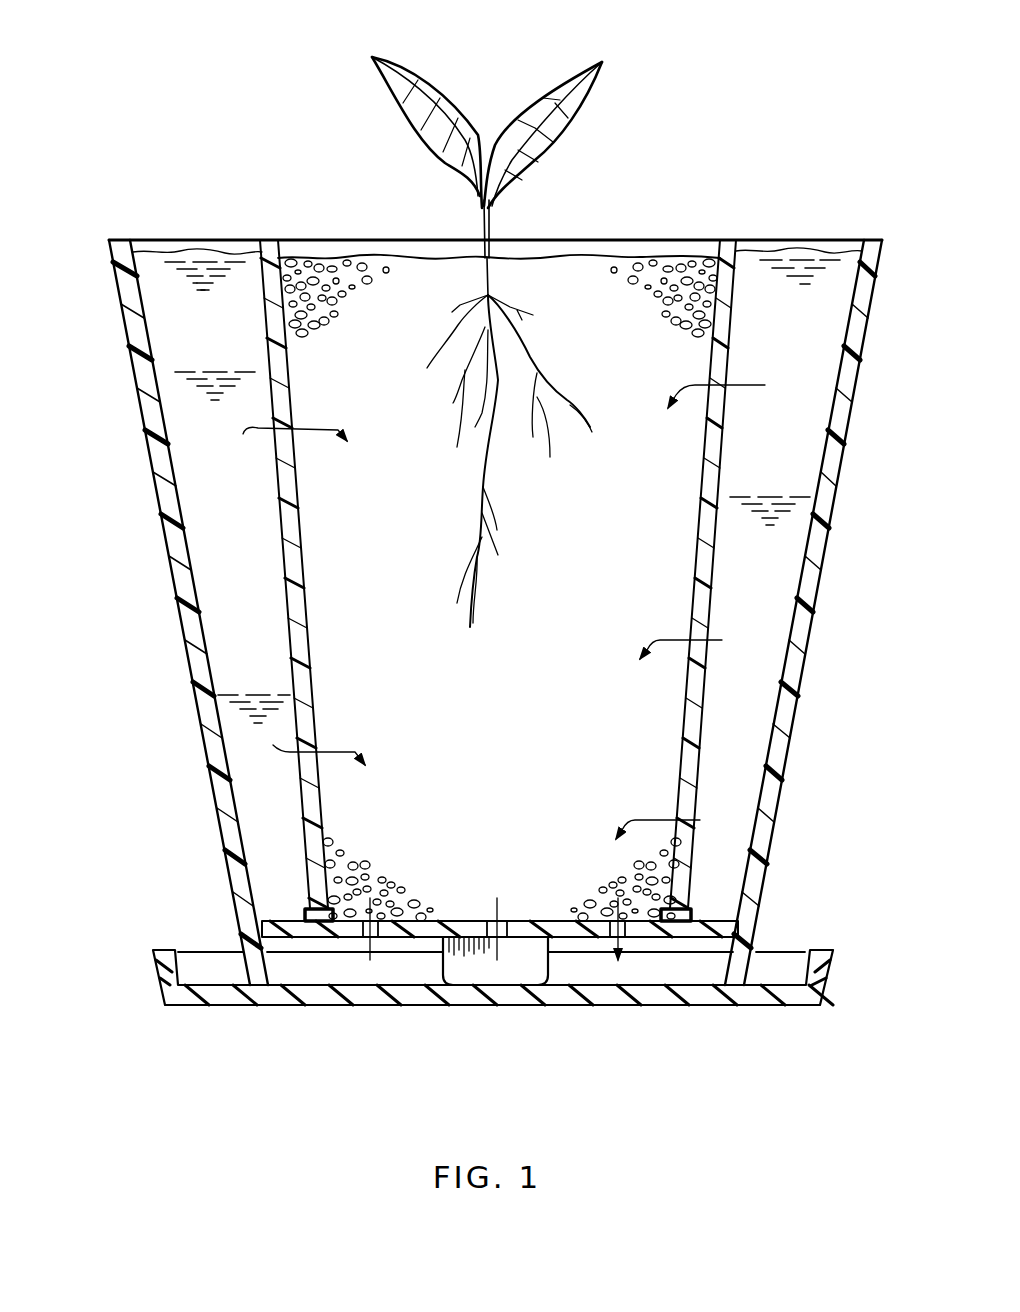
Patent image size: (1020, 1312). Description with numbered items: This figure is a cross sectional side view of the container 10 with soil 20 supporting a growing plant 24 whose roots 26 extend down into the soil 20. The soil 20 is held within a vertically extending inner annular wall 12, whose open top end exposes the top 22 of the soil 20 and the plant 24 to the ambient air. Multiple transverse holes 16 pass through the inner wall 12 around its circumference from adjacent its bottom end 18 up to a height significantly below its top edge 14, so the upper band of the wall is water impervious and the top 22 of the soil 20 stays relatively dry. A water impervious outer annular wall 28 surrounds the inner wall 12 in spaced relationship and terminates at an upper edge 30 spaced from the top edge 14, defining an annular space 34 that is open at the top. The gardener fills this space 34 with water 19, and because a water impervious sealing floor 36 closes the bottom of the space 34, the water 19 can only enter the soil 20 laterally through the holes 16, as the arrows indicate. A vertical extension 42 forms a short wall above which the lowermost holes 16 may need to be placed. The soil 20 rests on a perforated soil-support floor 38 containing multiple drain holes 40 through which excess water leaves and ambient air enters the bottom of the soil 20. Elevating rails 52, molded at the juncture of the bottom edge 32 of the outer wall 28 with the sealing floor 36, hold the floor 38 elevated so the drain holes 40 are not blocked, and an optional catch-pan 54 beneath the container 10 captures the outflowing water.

The container 10 is at (311, 220).
The inner annular wall 12 is at (299, 493).
The top edge of inner wall 14 is at (730, 240).
The transverse holes 16 is at (293, 340).
The bottom end of inner wall 18 is at (317, 922).
The water 19 is at (214, 393).
The soil 20 is at (506, 692).
The top of soil 22 is at (556, 262).
The plant 24 is at (604, 66).
The roots 26 is at (547, 462).
The outer annular wall 28 is at (790, 660).
The upper edge of outer wall 30 is at (868, 240).
The bottom edge of outer wall 32 is at (760, 920).
The annular space 34 is at (775, 458).
The sealing floor 36 is at (720, 913).
The soil-support floor 38 is at (533, 921).
The drain holes 40 is at (495, 921).
The vertical extension 42 is at (318, 915).
The elevating rails 52 is at (742, 962).
The catch-pan 54 is at (828, 968).